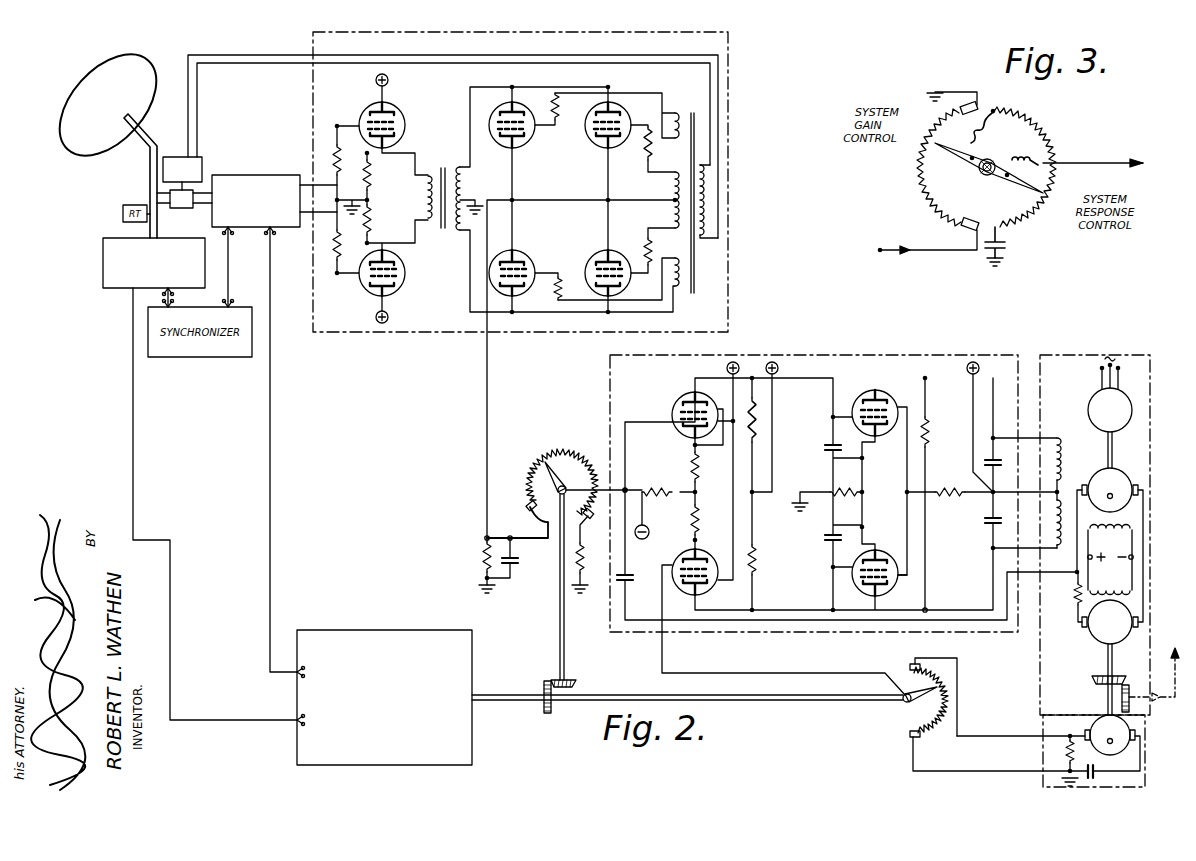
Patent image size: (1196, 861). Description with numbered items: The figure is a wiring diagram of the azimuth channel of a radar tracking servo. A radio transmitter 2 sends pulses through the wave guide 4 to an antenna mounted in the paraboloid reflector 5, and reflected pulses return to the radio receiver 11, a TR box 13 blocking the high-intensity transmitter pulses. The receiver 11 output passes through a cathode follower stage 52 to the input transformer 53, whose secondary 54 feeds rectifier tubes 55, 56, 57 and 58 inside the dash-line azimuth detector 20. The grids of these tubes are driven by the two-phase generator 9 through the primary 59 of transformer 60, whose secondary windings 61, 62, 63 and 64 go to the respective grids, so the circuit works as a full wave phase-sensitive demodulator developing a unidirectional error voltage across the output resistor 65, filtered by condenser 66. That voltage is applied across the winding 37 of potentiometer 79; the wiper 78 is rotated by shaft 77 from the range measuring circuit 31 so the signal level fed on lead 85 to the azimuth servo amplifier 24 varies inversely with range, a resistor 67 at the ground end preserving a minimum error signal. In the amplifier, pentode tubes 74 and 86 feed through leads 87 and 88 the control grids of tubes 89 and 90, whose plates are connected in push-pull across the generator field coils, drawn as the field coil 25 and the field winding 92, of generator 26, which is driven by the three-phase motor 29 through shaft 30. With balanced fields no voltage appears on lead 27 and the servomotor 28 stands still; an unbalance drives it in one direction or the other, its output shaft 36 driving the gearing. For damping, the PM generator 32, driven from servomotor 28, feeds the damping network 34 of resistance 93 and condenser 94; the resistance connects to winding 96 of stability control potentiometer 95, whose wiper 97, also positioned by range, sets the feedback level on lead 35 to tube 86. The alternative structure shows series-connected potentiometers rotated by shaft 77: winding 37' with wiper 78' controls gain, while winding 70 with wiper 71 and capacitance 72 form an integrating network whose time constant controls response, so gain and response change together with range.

In FIG. 2, the radio transmitter 2 is at (104, 281).
In FIG. 2, the wave guide 4 is at (142, 150).
In FIG. 2, the paraboloid reflector 5 is at (74, 144).
In FIG. 2, the two-phase generator 9 is at (204, 166).
In FIG. 2, the radio receiver 11 is at (265, 173).
In FIG. 2, the TR box 13 is at (183, 210).
In FIG. 2, the azimuth detector 20 is at (730, 210).
In FIG. 2, the azimuth servo amplifier 24 is at (885, 352).
In FIG. 2, the motor field coil 25 is at (1022, 542).
In FIG. 2, the generator 26 is at (1130, 479).
In FIG. 2, the lead 27 is at (1082, 546).
In FIG. 2, the azimuth servomotor 28 is at (1125, 641).
In FIG. 2, the three-phase motor 29 is at (1132, 410).
In FIG. 2, the shaft 30 is at (1115, 459).
In FIG. 2, the range measuring circuit 31 is at (368, 630).
In FIG. 2, the PM generator 32 is at (1132, 739).
In FIG. 2, the damping network 34 is at (1032, 783).
In FIG. 2, the lead 35 is at (798, 702).
In FIG. 2, the output shaft 36 is at (1152, 700).
In FIG. 2, the potentiometer winding 37 is at (538, 461).
In FIG. 2, the cathode follower stage 52 is at (347, 296).
In FIG. 2, the input transformer 53 is at (444, 243).
In FIG. 2, the secondary 54 is at (466, 184).
In FIG. 2, the rectifier tube 55 is at (525, 146).
In FIG. 2, the rectifier tube 56 is at (585, 141).
In FIG. 2, the rectifier tube 57 is at (613, 255).
In FIG. 2, the rectifier tube 58 is at (533, 258).
In FIG. 2, the primary 59 is at (712, 186).
In FIG. 2, the transformer 60 is at (700, 295).
In FIG. 2, the secondary winding 61 is at (683, 111).
In FIG. 2, the secondary winding 62 is at (672, 185).
In FIG. 2, the secondary winding 63 is at (672, 213).
In FIG. 2, the secondary winding 64 is at (688, 272).
In FIG. 2, the output resistor 65 is at (480, 549).
In FIG. 2, the filtering condenser 66 is at (518, 567).
In FIG. 2, the resistor 67 is at (583, 563).
In FIG. 2, the tube 74 is at (683, 401).
In FIG. 2, the wiper 78 is at (517, 503).
In FIG. 2, the potentiometer 79 is at (562, 452).
In FIG. 2, the lead 85 is at (628, 489).
In FIG. 2, the tube 86 is at (683, 589).
In FIG. 2, the lead 87 is at (795, 380).
In FIG. 2, the lead 88 is at (785, 610).
In FIG. 2, the tube 89 is at (866, 394).
In FIG. 2, the tube 90 is at (858, 592).
In FIG. 2, the field winding 92 is at (1057, 549).
In FIG. 2, the resistance 93 is at (1062, 751).
In FIG. 2, the condenser 94 is at (1090, 780).
In FIG. 2, the stability control potentiometer 95 is at (900, 715).
In FIG. 2, the winding 96 is at (945, 697).
In FIG. 2, the wiper 97 is at (905, 686).
In FIG. 3, the winding 70 is at (1033, 129).
In FIG. 3, the wiper 71 is at (1027, 178).
In FIG. 3, the capacitance 72 is at (1010, 248).
In FIG. 3, the shaft 77 is at (983, 178).
In FIG. 3, the wiper 78' is at (928, 173).
In FIG. 3, the winding 37' is at (892, 194).